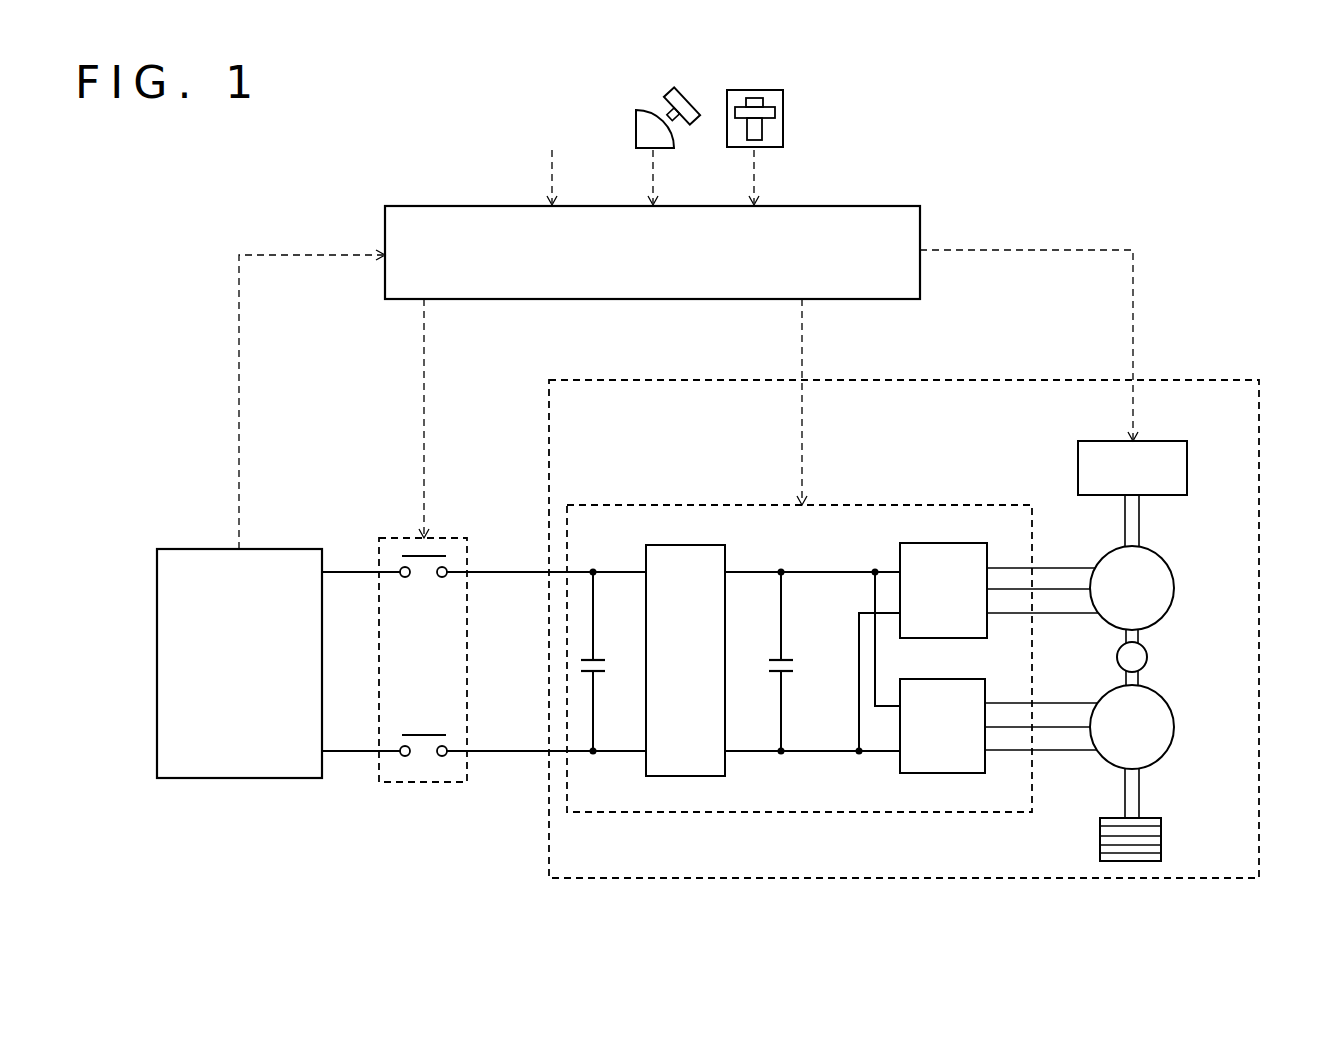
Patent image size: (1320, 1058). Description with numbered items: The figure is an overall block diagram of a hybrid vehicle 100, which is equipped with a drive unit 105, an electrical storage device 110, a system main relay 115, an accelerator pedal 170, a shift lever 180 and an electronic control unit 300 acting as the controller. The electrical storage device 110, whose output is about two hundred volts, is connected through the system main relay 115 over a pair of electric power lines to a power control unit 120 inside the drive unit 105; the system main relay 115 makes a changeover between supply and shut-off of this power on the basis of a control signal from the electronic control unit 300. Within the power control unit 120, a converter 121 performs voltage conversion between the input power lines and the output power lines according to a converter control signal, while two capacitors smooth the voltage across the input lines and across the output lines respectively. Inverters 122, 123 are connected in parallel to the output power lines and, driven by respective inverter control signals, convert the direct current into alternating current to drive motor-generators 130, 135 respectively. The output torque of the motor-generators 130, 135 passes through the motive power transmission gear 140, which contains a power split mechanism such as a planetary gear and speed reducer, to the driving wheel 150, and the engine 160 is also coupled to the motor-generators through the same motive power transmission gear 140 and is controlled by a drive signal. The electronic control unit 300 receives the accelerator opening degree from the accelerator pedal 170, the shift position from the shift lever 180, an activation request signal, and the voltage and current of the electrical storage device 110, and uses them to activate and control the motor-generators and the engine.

The vehicle 100 is at (1215, 186).
The drive unit 105 is at (1210, 380).
The electrical storage device 110 is at (287, 549).
The system main relay 115 is at (446, 538).
The power control unit 120 is at (958, 505).
The converter 121 is at (685, 545).
The inverter 122 is at (944, 543).
The inverter 123 is at (944, 679).
The motor-generator 130 is at (1175, 588).
The motor-generator 135 is at (1175, 727).
The motive power transmission gear 140 is at (1148, 656).
The driving wheel 150 is at (1161, 838).
The engine 160 is at (1163, 441).
The accelerator pedal 170 is at (700, 86).
The shift lever 180 is at (769, 90).
The electronic control unit 300 is at (848, 206).